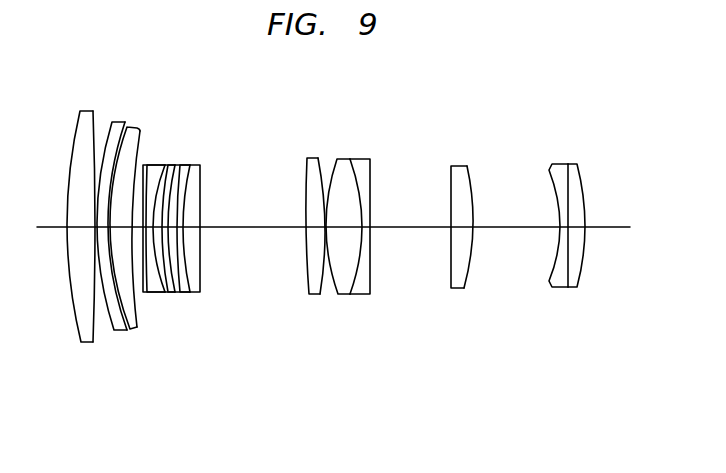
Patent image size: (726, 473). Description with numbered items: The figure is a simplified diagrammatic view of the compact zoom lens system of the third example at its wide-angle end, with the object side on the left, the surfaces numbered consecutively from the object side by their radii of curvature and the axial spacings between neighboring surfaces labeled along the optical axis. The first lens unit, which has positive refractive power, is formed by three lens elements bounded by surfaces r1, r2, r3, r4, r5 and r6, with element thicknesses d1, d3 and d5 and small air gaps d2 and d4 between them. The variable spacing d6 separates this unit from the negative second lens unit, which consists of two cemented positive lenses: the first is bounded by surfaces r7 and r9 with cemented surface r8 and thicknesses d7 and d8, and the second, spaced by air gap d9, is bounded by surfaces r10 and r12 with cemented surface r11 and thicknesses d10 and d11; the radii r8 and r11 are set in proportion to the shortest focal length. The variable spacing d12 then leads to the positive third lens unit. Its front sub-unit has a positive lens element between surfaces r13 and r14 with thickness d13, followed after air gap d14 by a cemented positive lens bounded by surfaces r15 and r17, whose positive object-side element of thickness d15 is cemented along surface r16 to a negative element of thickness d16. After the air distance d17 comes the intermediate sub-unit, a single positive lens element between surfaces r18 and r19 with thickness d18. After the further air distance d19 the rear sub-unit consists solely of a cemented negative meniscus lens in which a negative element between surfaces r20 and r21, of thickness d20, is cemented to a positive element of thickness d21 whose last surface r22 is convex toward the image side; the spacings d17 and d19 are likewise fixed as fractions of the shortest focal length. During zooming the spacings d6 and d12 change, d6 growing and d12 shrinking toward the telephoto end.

The radius of curvature of first surface r1 is at (76, 125).
The radius of curvature of second surface r2 is at (94, 118).
The radius of curvature of third surface r3 is at (110, 125).
The radius of curvature of fourth surface r4 is at (125, 124).
The radius of curvature of fifth surface r5 is at (128, 130).
The radius of curvature of sixth surface r6 is at (139, 135).
The radius of curvature of seventh surface r7 is at (147, 170).
The radius of curvature of eighth surface r8 is at (163, 172).
The radius of curvature of ninth surface r9 is at (168, 170).
The radius of curvature of tenth surface r10 is at (175, 172).
The radius of curvature of eleventh surface r11 is at (181, 170).
The radius of curvature of twelfth surface r12 is at (191, 172).
The radius of curvature of thirteenth surface r13 is at (307, 165).
The radius of curvature of fourteenth surface r14 is at (318, 165).
The radius of curvature of fifteenth surface r15 is at (337, 165).
The radius of curvature of sixteenth surface r16 is at (350, 165).
The radius of curvature of seventeenth surface r17 is at (370, 165).
The radius of curvature of eighteenth surface r18 is at (452, 172).
The radius of curvature of nineteenth surface r19 is at (467, 172).
The radius of curvature of twentieth surface r20 is at (551, 172).
The radius of curvature of twenty-first surface r21 is at (568, 168).
The radius of curvature of twenty-second surface r22 is at (578, 172).
The first surface spacing d1 is at (81, 229).
The second surface spacing d2 is at (96, 229).
The third surface spacing d3 is at (103, 229).
The fourth surface spacing d4 is at (109, 229).
The fifth surface spacing d5 is at (121, 229).
The sixth surface spacing d6 is at (140, 229).
The seventh surface spacing d7 is at (150, 229).
The eighth surface spacing d8 is at (157, 229).
The ninth surface spacing d9 is at (165, 229).
The tenth surface spacing d10 is at (172, 229).
The eleventh surface spacing d11 is at (180, 229).
The twelfth surface spacing d12 is at (253, 229).
The thirteenth surface spacing d13 is at (316, 229).
The fourteenth surface spacing d14 is at (326, 229).
The fifteenth surface spacing d15 is at (344, 229).
The sixteenth surface spacing d16 is at (366, 229).
The seventeenth surface spacing d17 is at (378, 229).
The eighteenth surface spacing d18 is at (462, 229).
The nineteenth surface spacing d19 is at (510, 229).
The twentieth surface spacing d20 is at (563, 229).
The twenty-first surface spacing d21 is at (578, 229).